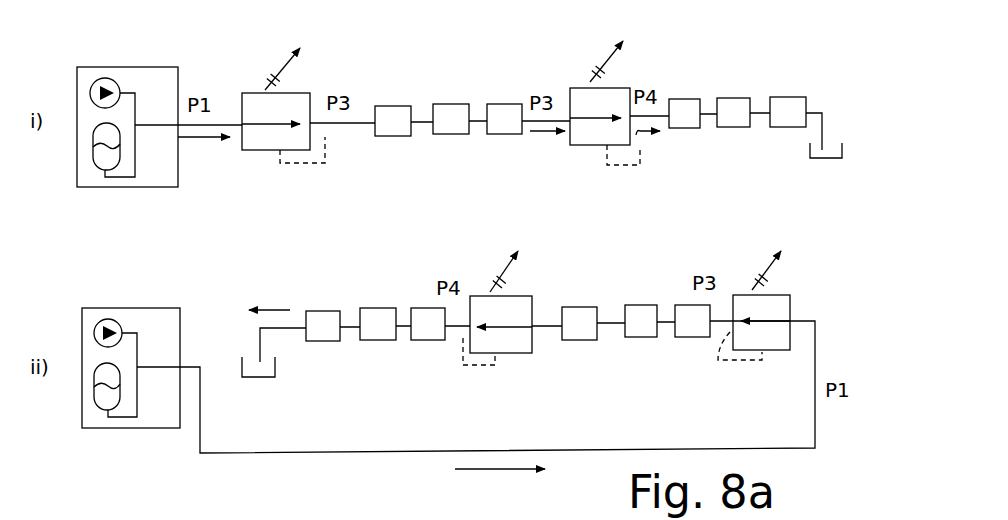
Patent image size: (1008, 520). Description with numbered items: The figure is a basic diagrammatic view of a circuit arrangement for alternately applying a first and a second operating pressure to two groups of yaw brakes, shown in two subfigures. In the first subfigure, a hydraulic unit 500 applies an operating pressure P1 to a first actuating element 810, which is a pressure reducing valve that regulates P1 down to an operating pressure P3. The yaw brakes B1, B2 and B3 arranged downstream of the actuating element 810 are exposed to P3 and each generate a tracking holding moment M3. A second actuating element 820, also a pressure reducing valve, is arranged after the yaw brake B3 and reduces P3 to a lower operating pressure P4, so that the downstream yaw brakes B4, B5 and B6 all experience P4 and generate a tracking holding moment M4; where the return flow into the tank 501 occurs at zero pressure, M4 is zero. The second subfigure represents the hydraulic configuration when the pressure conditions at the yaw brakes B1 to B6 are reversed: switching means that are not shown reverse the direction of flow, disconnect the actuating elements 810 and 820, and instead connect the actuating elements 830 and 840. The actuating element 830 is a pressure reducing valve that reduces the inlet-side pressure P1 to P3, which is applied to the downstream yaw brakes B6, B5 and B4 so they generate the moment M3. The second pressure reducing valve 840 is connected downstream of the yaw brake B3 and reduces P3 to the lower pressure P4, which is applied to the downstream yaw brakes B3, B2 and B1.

The hydraulic unit 500 is at (124, 74).
The tank 501 is at (822, 162).
The first actuating element 810 is at (295, 97).
The second actuating element 820 is at (572, 90).
The actuating element 830 is at (782, 310).
The second pressure reducing valve 840 is at (510, 347).
The yaw brake B1 is at (398, 131).
The yaw brake B2 is at (460, 129).
The yaw brake B3 is at (515, 131).
The yaw brake B4 is at (683, 122).
The yaw brake B5 is at (735, 120).
The yaw brake B6 is at (785, 122).